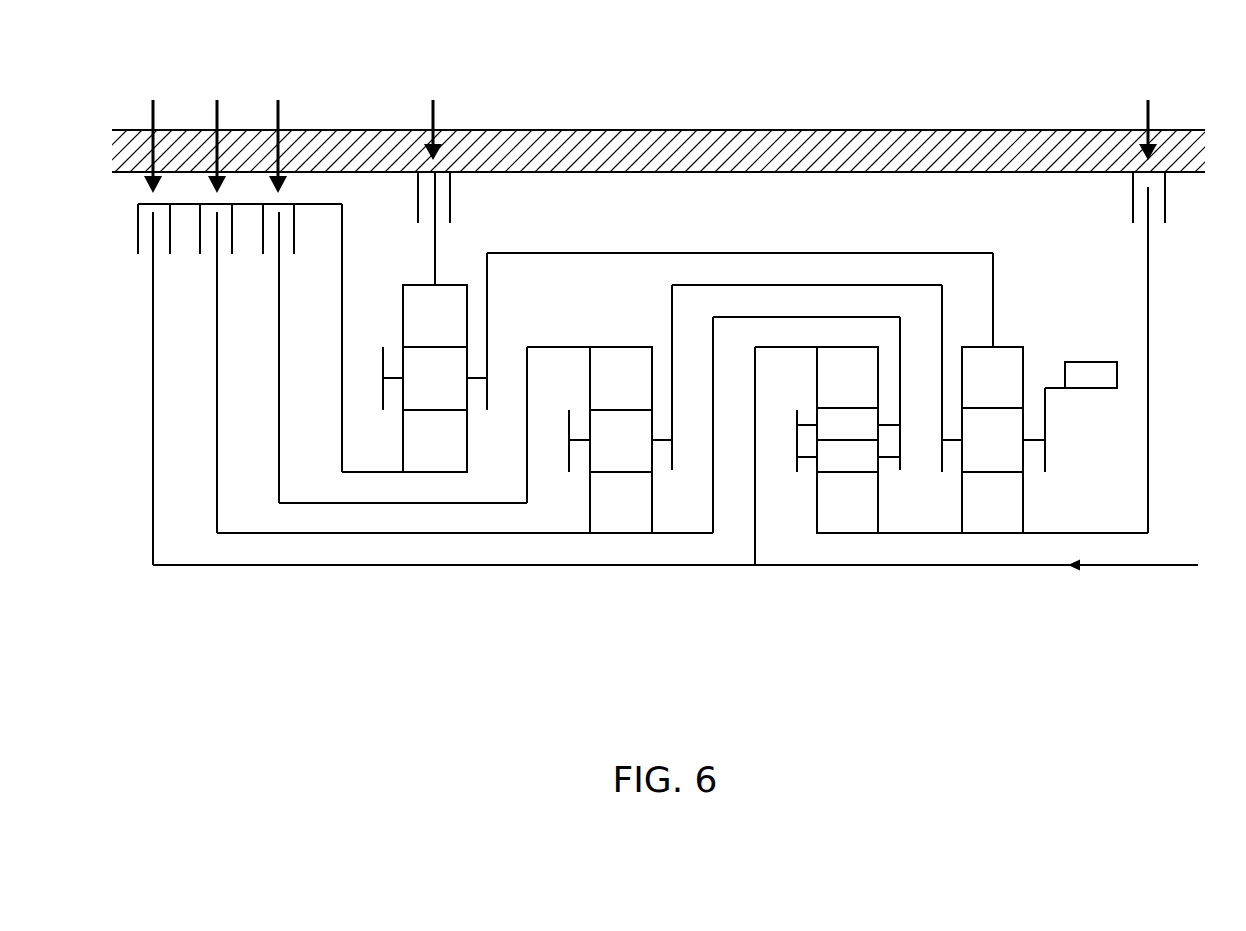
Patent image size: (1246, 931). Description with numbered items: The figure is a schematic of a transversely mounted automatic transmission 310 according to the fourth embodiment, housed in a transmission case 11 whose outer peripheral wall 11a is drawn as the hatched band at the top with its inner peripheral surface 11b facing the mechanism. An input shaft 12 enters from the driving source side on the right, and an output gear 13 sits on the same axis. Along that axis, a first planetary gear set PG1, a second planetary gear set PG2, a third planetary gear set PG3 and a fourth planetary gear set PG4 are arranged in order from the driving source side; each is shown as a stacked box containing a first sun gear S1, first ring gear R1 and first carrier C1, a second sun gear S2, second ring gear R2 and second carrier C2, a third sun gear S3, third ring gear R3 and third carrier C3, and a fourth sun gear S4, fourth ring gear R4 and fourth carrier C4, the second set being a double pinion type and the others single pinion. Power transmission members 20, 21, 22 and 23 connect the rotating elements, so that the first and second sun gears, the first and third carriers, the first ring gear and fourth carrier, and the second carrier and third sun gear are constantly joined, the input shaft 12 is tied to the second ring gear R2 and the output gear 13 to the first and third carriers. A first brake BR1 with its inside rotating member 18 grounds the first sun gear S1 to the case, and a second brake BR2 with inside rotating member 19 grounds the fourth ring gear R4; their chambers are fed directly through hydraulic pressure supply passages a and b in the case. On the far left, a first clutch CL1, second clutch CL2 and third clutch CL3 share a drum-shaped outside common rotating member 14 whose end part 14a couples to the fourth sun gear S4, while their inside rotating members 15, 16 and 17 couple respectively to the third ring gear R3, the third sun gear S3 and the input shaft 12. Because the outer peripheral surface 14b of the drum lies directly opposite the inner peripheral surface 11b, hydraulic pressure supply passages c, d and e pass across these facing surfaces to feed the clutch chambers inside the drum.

The automatic transmission 310 is at (998, 70).
The transmission case 11 is at (766, 127).
The outer peripheral wall 11a is at (668, 133).
The inner peripheral surface 11b is at (730, 174).
The hydraulic pressure supply passage a is at (1148, 118).
The hydraulic pressure supply passage b is at (433, 118).
The hydraulic pressure supply passage c is at (278, 134).
The hydraulic pressure supply passage d is at (217, 134).
The hydraulic pressure supply passage e is at (153, 134).
The outside common rotating member 14 is at (350, 256).
The end part 14a is at (376, 474).
The outer peripheral surface 14b is at (343, 204).
The first clutch CL1 is at (294, 255).
The second clutch CL2 is at (232, 255).
The third clutch CL3 is at (170, 255).
The inside rotating member 17 is at (415, 567).
The inside rotating member 16 is at (456, 535).
The inside rotating member 15 is at (500, 505).
The input shaft 12 is at (1168, 565).
The fourth planetary gear set PG4 is at (456, 282).
The fourth ring gear R4 is at (435, 316).
The fourth sun gear S4 is at (435, 441).
The fourth carrier C4 is at (383, 393).
The inside rotating member 19 is at (432, 270).
The second brake BR2 is at (452, 190).
The power transmission member 21 is at (735, 253).
The power transmission member 22 is at (782, 285).
The power transmission member 23 is at (822, 316).
The third planetary gear set PG3 is at (622, 344).
The third ring gear R3 is at (621, 378).
The third sun gear S3 is at (621, 502).
The third carrier C3 is at (573, 454).
The second planetary gear set PG2 is at (869, 343).
The second ring gear R2 is at (847, 377).
The second sun gear S2 is at (847, 502).
The second carrier C2 is at (799, 454).
The power transmission member 20 is at (920, 535).
The first planetary gear set PG1 is at (1010, 344).
The first ring gear R1 is at (992, 377).
The first sun gear S1 is at (992, 502).
The first carrier C1 is at (947, 392).
The output gear 13 is at (1095, 362).
The inside rotating member 18 is at (1150, 422).
The first brake BR1 is at (1131, 190).